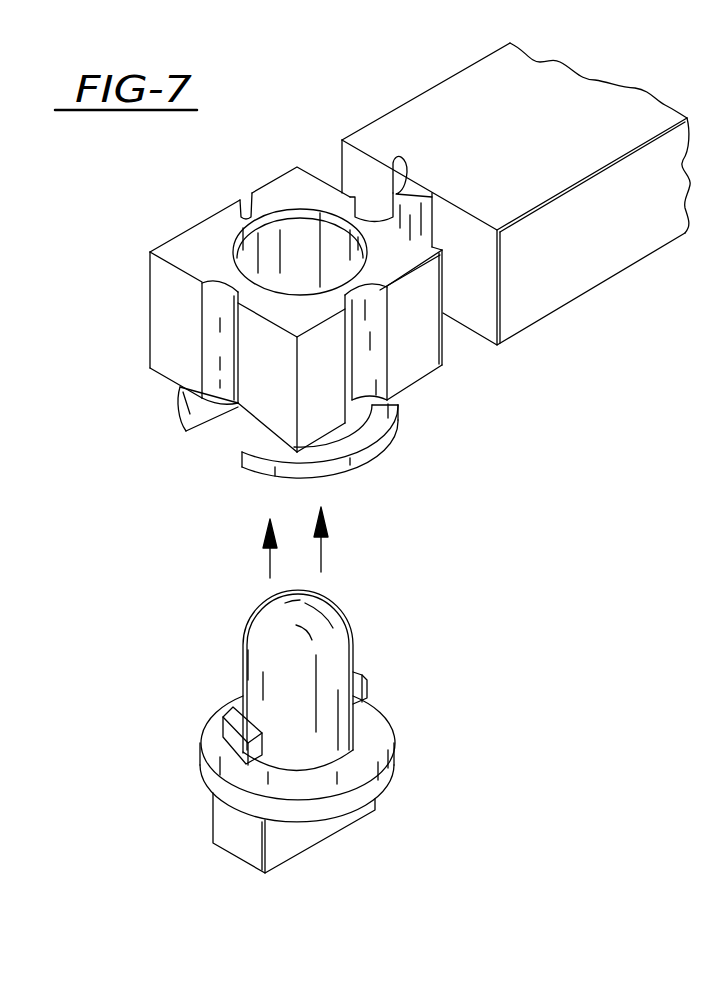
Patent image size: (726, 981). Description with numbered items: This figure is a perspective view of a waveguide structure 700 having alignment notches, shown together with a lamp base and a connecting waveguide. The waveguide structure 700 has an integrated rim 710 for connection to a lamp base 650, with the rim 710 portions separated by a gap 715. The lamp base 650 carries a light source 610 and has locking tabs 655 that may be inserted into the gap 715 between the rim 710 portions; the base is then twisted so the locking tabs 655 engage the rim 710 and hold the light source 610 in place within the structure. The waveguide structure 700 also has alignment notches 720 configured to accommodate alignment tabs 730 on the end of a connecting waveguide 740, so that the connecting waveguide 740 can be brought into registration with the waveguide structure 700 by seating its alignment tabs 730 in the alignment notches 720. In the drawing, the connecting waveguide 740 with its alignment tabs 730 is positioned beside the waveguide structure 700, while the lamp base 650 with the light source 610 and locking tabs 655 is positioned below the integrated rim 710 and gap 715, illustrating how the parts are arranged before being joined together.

The waveguide structure 700 is at (170, 238).
The integrated rim 710 is at (353, 432).
The gap 715 is at (233, 433).
The alignment notches 720 is at (233, 213).
The alignment tabs 730 is at (405, 187).
The connecting waveguide 740 is at (543, 313).
The light source 610 is at (340, 643).
The lamp base 650 is at (380, 785).
The locking tabs 655 is at (367, 678).